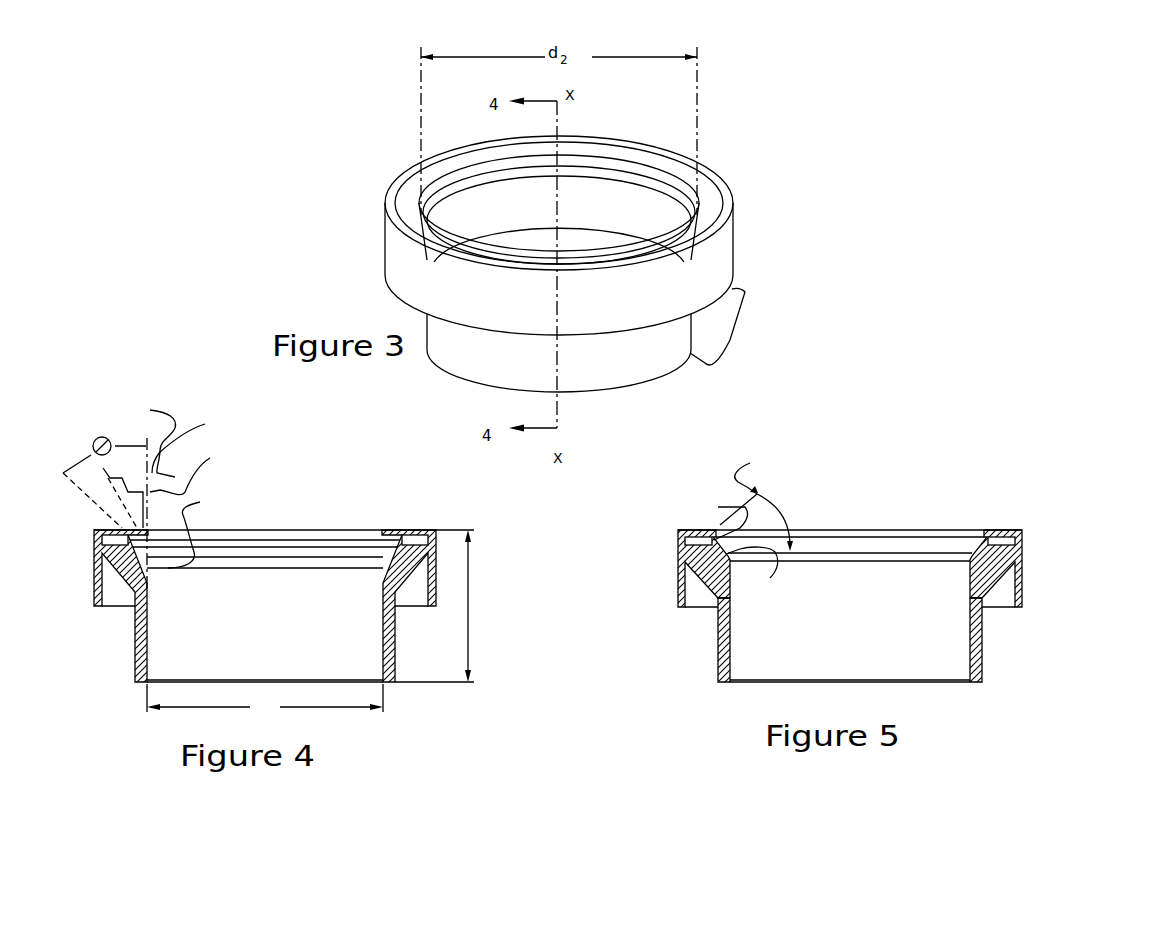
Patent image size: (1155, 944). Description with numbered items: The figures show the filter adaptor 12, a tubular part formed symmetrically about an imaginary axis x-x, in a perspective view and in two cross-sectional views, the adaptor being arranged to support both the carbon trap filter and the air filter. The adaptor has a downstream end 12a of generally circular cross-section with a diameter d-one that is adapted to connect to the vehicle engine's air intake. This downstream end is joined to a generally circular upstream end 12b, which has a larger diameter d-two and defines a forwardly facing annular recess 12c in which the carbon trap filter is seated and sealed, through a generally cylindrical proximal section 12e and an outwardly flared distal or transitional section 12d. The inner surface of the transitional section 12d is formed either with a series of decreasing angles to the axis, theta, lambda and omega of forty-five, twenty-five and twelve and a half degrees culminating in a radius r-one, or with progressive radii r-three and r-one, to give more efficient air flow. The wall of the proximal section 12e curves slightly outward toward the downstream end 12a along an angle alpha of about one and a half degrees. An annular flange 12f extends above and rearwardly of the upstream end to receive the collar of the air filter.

In FIG. 3, the adaptor 12 is at (758, 236).
In FIG. 4, the adaptor 12 is at (293, 560).
In FIG. 5, the adaptor 12 is at (1060, 631).
In FIG. 3, the downstream end 12a is at (745, 292).
In FIG. 5, the downstream end 12a is at (980, 682).
In FIG. 3, the upstream end 12b is at (696, 174).
In FIG. 4, the upstream end 12b is at (407, 518).
In FIG. 5, the upstream end 12b is at (982, 537).
In FIG. 5, the annular recess 12c is at (1003, 530).
In FIG. 5, the distal or transitional section 12d is at (672, 535).
In FIG. 5, the proximal section 12e is at (672, 578).
In FIG. 4, the annular flange 12f is at (437, 573).
In FIG. 5, the annular flange 12f is at (1022, 557).